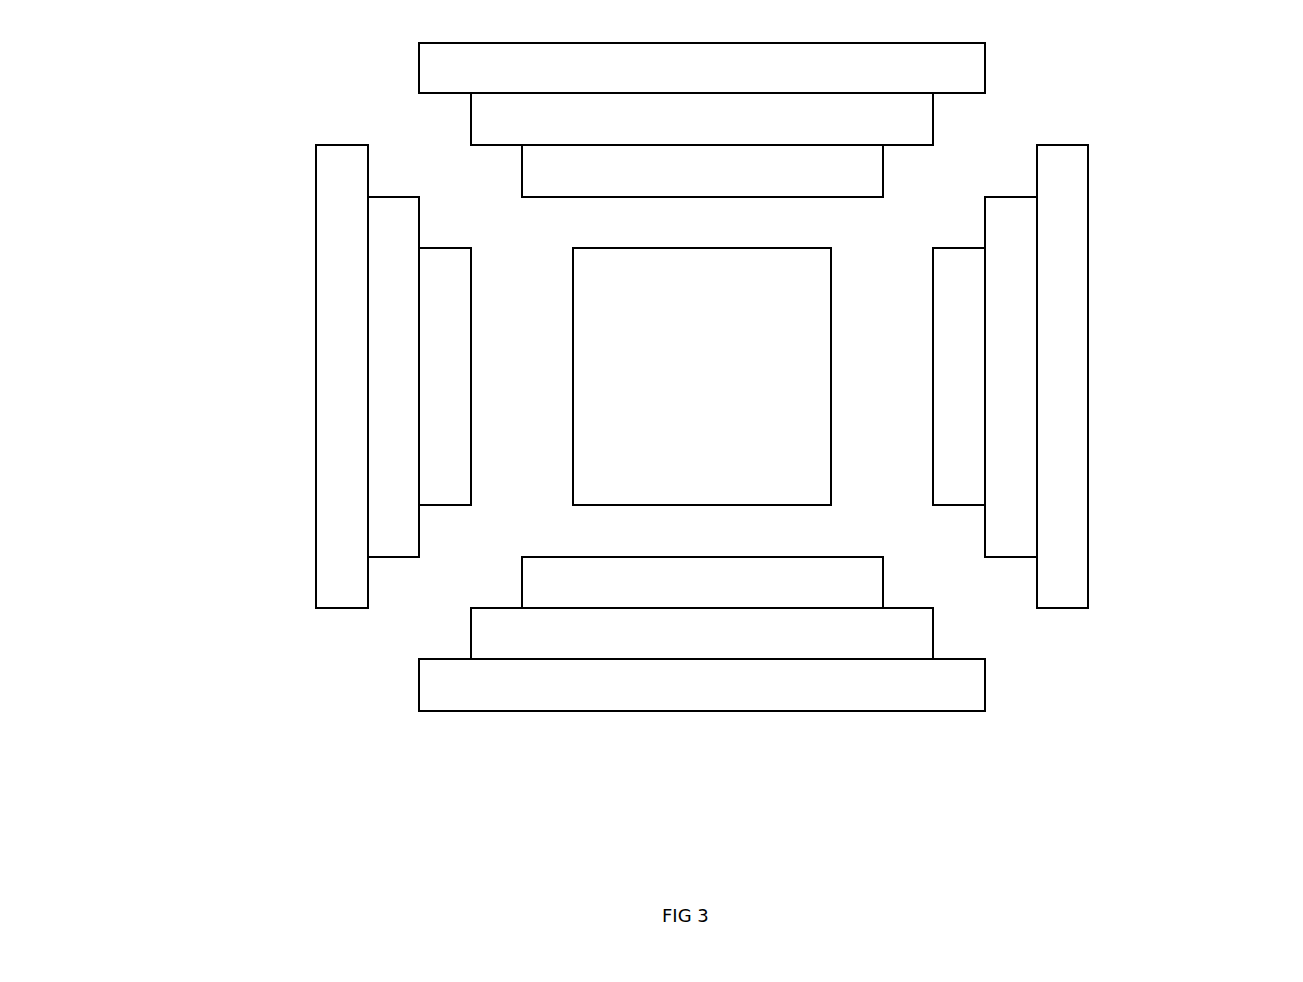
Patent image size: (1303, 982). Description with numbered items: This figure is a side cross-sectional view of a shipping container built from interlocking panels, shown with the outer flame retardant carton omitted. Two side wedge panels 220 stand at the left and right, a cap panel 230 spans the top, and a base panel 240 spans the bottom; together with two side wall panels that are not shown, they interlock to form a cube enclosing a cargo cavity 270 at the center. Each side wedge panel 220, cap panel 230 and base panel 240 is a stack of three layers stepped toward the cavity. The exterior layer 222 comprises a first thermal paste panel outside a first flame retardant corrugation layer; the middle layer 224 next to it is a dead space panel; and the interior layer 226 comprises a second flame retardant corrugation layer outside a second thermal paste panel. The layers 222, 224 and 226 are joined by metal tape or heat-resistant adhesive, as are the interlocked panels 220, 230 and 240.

The side wedge panel 220 is at (307, 461).
The exterior layer 222 is at (302, 278).
The middle layer 224 is at (354, 364).
The interior layer 226 is at (405, 441).
The cap panel 230 is at (741, 33).
The base panel 240 is at (763, 723).
The cargo cavity 270 is at (715, 395).